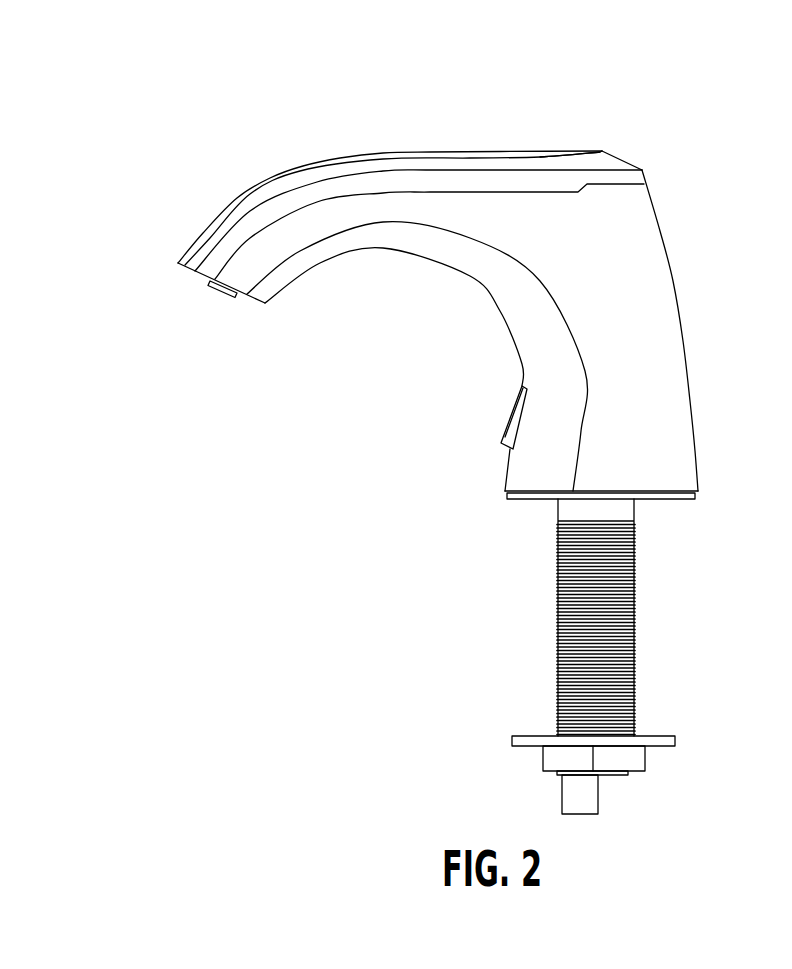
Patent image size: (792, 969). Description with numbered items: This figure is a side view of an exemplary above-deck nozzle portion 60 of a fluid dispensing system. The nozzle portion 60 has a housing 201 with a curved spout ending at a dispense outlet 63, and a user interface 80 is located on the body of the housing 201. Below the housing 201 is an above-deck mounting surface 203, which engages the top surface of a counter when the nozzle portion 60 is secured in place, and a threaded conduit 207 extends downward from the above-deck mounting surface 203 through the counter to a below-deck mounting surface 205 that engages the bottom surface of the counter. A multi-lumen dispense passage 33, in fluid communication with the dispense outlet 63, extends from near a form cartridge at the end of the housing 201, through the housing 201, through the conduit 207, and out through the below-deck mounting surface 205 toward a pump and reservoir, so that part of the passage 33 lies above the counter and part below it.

The above-deck nozzle portion 60 is at (313, 86).
The housing 201 is at (595, 163).
The dispense outlet 63 is at (216, 285).
The user interface 80 is at (510, 410).
The above-deck mounting surface 203 is at (668, 498).
The threaded conduit 207 is at (605, 612).
The below-deck mounting surface 205 is at (658, 735).
The multi-lumen dispense passage 33 is at (573, 797).